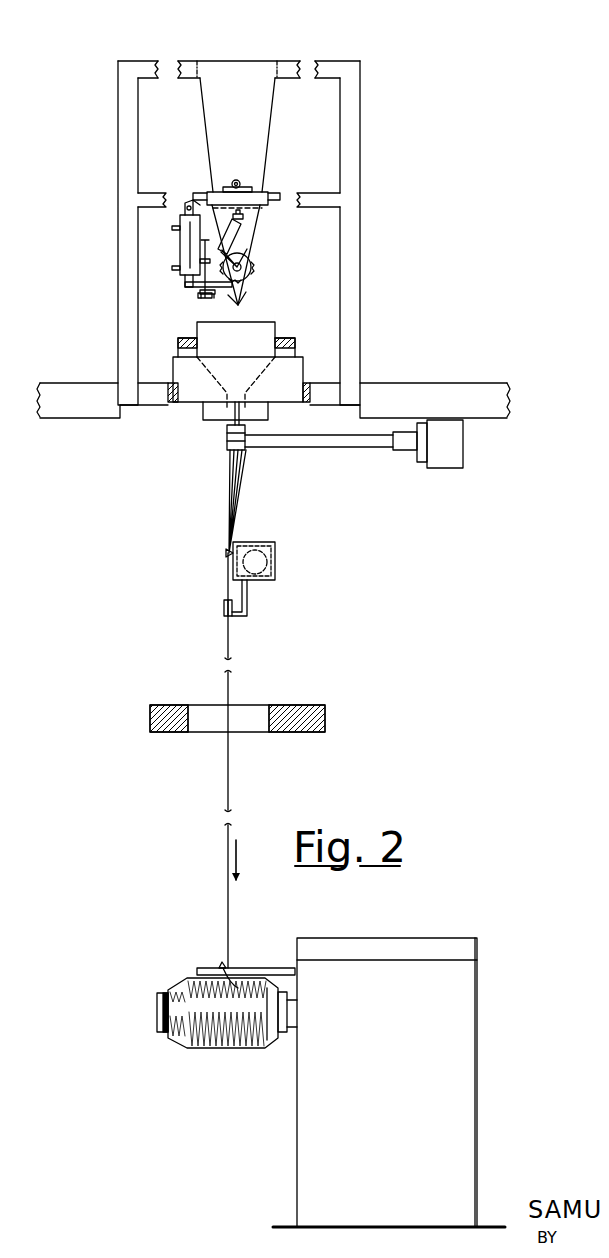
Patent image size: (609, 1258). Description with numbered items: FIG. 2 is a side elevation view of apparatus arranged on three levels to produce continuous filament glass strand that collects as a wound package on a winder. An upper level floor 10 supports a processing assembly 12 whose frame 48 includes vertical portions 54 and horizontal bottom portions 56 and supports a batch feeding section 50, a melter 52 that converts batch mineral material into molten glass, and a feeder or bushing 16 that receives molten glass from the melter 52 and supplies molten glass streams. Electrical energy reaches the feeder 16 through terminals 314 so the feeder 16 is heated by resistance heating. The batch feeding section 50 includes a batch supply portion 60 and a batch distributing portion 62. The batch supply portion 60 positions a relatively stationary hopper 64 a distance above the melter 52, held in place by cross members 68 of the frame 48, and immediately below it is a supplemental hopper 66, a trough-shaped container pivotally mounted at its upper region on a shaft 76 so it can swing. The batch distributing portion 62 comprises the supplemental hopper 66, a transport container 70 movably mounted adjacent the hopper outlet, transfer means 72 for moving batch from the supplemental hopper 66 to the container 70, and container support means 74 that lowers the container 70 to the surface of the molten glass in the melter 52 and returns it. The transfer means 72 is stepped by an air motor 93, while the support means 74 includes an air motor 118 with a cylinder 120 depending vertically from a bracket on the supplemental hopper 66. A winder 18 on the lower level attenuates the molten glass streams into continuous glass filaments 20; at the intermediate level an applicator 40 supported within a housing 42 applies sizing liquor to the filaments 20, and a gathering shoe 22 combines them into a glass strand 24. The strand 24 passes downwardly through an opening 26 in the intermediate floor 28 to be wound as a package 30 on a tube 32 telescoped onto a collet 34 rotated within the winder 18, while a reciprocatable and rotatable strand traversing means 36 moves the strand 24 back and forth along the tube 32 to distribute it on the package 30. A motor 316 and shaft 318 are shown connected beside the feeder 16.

The upper level floor 10 is at (60, 383).
The processing assembly 12 is at (292, 52).
The feeder or bushing 16 is at (227, 410).
The winder 18 is at (443, 903).
The continuous glass filaments 20 is at (228, 490).
The gathering shoe 22 is at (224, 607).
The glass strand 24 is at (228, 632).
The opening 26 is at (212, 720).
The intermediate floor 28 is at (152, 705).
The package 30 is at (190, 977).
The tube 32 is at (166, 989).
The collet 34 is at (157, 1004).
The strand traversing means 36 is at (222, 965).
The applicator 40 is at (243, 550).
The housing 42 is at (276, 559).
The frame 48 is at (364, 60).
The batch feeding section 50 is at (287, 200).
The melter 52 is at (191, 404).
The vertical portions 54 is at (118, 120).
The horizontal bottom portions 56 is at (185, 405).
The batch supply portion 60 is at (282, 108).
The batch distributing portion 62 is at (264, 281).
The stationary hopper 64 is at (201, 92).
The supplemental hopper 66 is at (267, 222).
The cross members 68 is at (188, 70).
The transport container 70 is at (248, 296).
The transfer means 72 is at (266, 261).
The container support means 74 is at (174, 283).
The shaft 76 is at (239, 181).
The air motor 93 is at (251, 232).
The air motor 118 is at (174, 244).
The cylinder 120 is at (180, 238).
The terminals 314 is at (229, 422).
The motor 316 is at (463, 452).
The drive shaft 318 is at (344, 448).